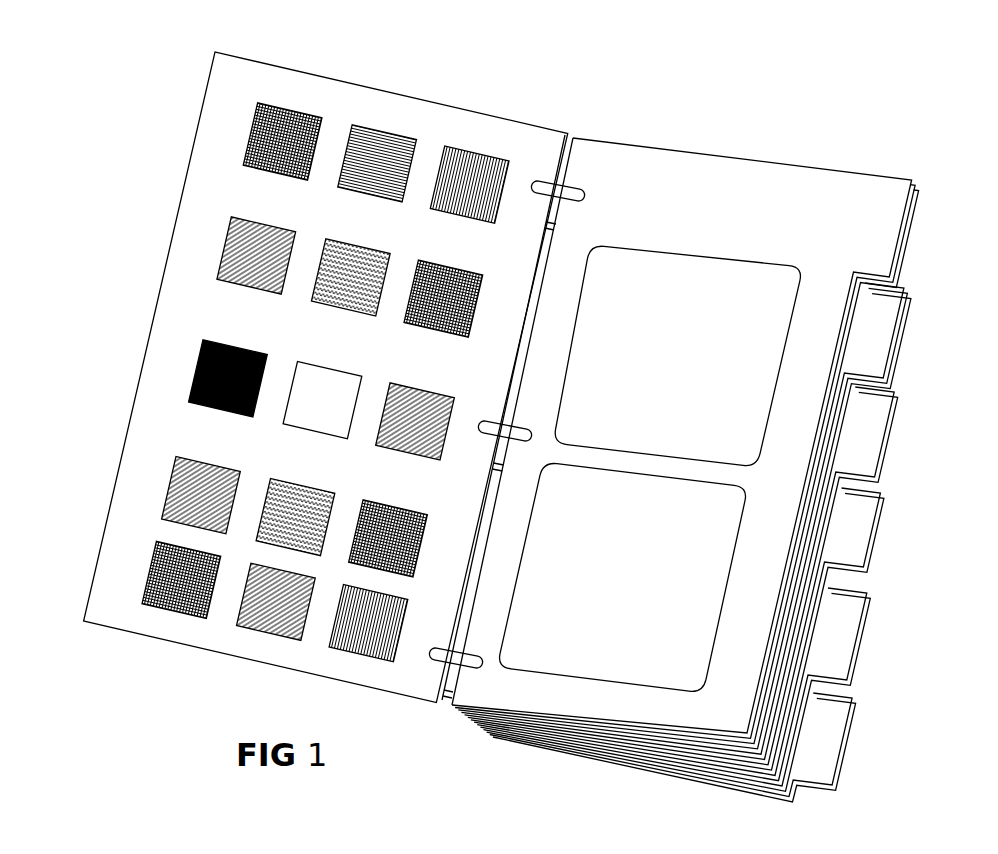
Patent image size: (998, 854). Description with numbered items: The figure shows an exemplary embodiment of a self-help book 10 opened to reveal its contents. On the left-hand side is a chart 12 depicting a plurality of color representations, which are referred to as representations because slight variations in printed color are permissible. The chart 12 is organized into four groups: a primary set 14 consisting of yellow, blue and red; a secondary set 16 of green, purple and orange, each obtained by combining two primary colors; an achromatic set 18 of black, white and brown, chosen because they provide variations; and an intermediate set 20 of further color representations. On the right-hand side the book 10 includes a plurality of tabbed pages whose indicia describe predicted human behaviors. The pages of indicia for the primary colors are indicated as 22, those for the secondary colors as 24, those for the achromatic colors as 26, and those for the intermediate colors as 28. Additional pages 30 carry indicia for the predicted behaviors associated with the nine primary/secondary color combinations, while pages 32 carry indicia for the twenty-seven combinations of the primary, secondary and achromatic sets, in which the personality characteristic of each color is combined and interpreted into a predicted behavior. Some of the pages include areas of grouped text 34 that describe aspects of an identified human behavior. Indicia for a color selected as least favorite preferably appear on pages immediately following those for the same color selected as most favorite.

The book 10 is at (733, 140).
The chart 12 is at (337, 68).
The primary set 14 is at (214, 116).
The secondary set 16 is at (189, 241).
The achromatic set 18 is at (184, 365).
The intermediate set 20 is at (134, 479).
The pages of indicia for primary colors 22 is at (887, 200).
The pages of indicia for secondary colors 24 is at (883, 313).
The pages of indicia for achromatic colors 26 is at (858, 518).
The pages of indicia for intermediate colors 28 is at (833, 723).
The pages of indicia for primary/secondary color combinations 30 is at (870, 407).
The pages of indicia for twenty-seven color combinations 32 is at (843, 623).
The areas of grouped text 34 is at (680, 292).